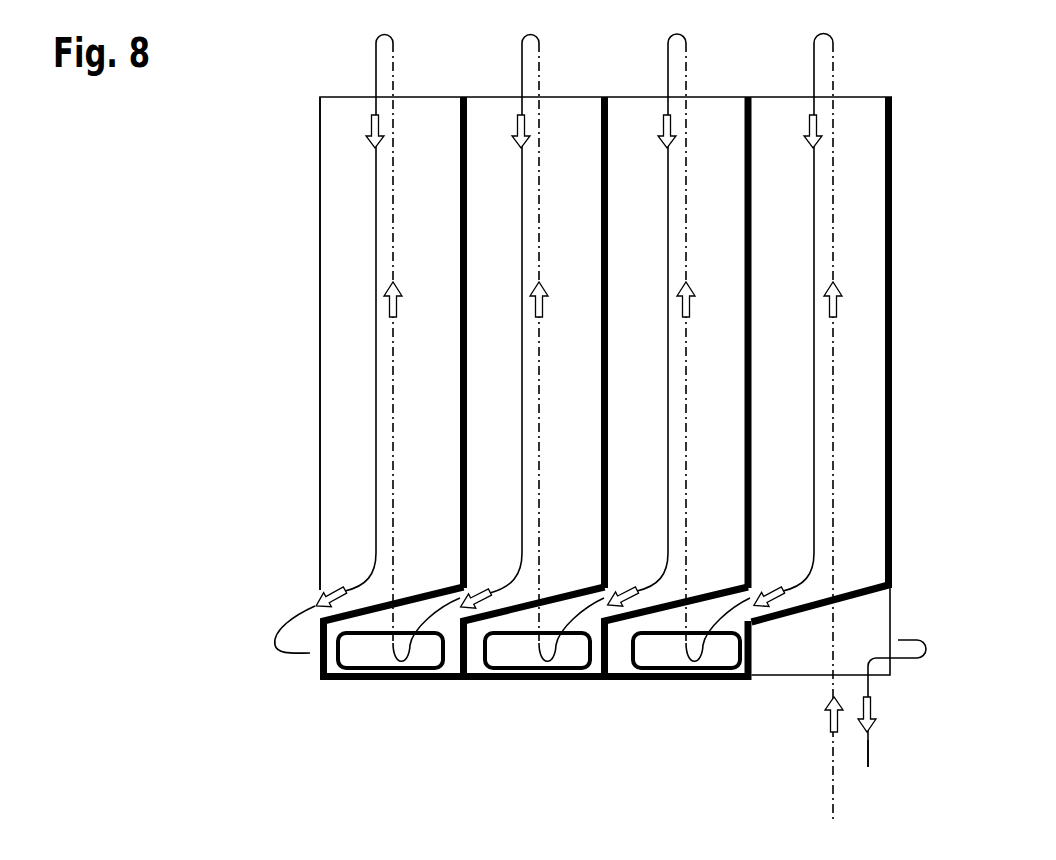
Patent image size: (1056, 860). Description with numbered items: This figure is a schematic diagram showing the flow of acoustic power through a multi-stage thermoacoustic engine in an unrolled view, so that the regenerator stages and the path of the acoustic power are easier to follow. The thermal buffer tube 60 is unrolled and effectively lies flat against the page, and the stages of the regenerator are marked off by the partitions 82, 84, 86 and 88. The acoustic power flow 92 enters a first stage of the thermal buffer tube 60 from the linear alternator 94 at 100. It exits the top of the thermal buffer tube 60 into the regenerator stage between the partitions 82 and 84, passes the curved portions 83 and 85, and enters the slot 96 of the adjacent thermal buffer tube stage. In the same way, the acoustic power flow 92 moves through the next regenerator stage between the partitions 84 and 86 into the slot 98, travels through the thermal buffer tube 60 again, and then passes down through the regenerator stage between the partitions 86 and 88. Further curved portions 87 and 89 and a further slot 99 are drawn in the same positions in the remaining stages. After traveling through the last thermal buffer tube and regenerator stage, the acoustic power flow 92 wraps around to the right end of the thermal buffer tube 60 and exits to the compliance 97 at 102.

The thermal buffer tube 60 is at (330, 237).
The partition 82 is at (320, 125).
The curved portion 83 is at (868, 595).
The partition 84 is at (744, 125).
The curved portion 85 is at (662, 613).
The partition 86 is at (601, 125).
The sloped plate 87 is at (517, 613).
The partition 88 is at (460, 125).
The sloped plate 89 is at (373, 613).
The acoustic power flow 92 is at (833, 397).
The linear alternator 94 is at (768, 769).
The slot 96 is at (737, 652).
The compliance 97 is at (941, 767).
The slot 98 is at (580, 647).
The heating element 99 is at (437, 647).
The entry point of acoustic power flow 100 is at (825, 715).
The exit point of acoustic power flow 102 is at (875, 710).